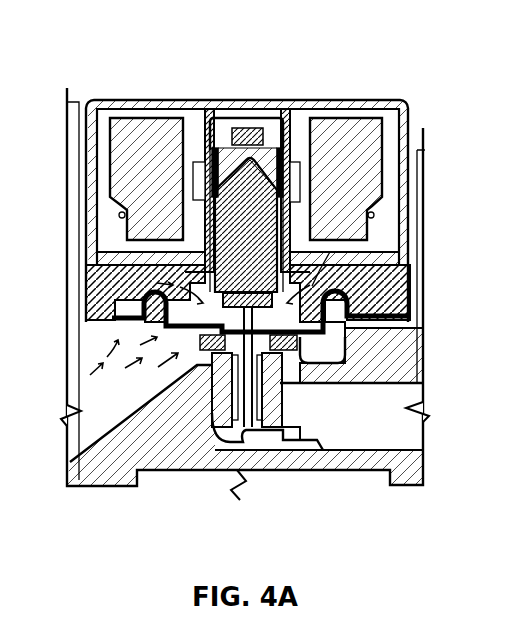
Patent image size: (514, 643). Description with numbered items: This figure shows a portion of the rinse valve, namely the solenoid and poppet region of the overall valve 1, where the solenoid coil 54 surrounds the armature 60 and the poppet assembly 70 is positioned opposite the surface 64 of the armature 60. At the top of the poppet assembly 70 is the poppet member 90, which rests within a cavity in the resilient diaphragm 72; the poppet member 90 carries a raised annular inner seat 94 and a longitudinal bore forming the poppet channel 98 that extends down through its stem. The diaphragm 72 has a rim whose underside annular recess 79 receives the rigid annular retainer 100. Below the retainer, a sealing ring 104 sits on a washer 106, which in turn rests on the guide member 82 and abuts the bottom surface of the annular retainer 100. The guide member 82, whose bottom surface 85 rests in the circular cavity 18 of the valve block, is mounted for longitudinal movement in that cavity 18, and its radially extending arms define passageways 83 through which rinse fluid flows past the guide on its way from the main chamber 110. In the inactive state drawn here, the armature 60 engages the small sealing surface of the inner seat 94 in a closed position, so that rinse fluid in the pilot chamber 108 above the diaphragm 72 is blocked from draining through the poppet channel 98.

The valve assembly 1 is at (412, 359).
The circular cavity 18 is at (178, 470).
The coil 54 is at (292, 177).
The armature 60 is at (260, 200).
The surface 64 is at (248, 305).
The poppet assembly 70 is at (135, 345).
The resilient diaphragm 72 is at (332, 292).
The annular recess 79 is at (350, 304).
The guide member 82 is at (276, 428).
The passageways 83 is at (218, 392).
The bottom surface 85 is at (268, 430).
The poppet member 90 is at (400, 260).
The raised annular inner seat 94 is at (212, 283).
The poppet channel 98 is at (218, 452).
The rigid annular retainer 100 is at (350, 355).
The sealing ring 104 is at (365, 372).
The washer 106 is at (285, 412).
The pilot chamber 108 is at (200, 253).
The main chamber 110 is at (312, 365).